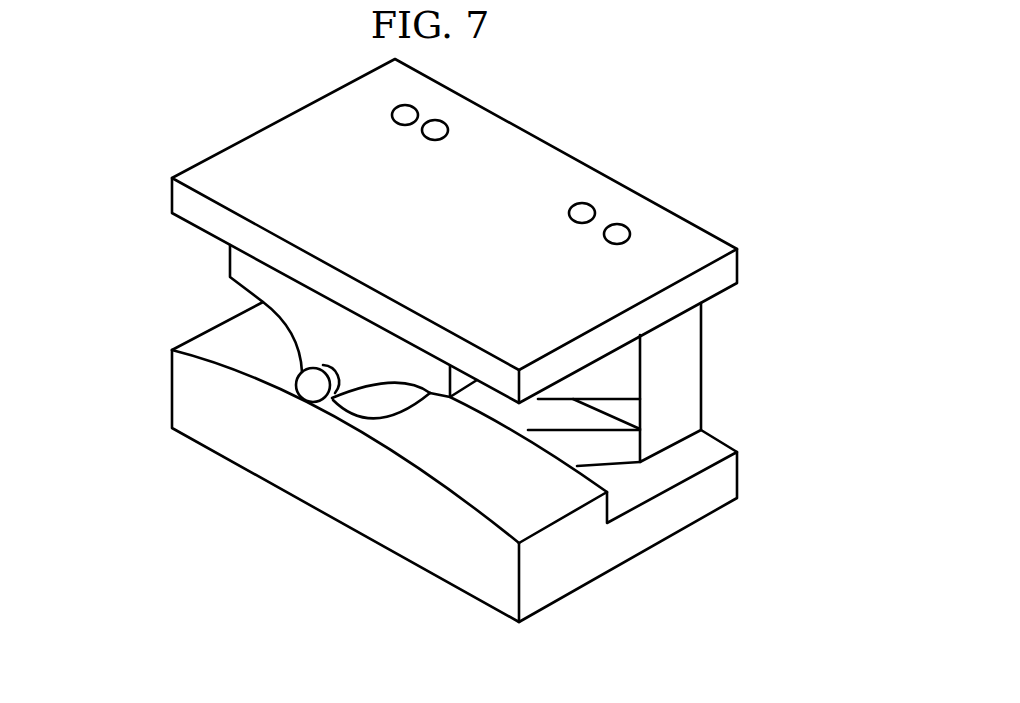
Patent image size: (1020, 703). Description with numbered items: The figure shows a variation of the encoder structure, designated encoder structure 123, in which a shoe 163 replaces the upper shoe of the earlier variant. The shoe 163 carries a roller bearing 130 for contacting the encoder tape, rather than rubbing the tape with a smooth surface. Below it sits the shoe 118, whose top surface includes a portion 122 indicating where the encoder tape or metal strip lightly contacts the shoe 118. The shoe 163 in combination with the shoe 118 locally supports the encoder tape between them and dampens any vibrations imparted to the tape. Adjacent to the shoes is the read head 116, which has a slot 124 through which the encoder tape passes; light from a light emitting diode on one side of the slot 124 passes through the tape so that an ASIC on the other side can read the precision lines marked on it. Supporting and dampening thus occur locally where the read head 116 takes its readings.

The shoe 163 is at (332, 143).
The encoder structure 123 is at (133, 207).
The shoe 118 is at (172, 350).
The portion of the top surface of the shoe 122 is at (331, 411).
The roller bearing 130 is at (360, 402).
The read head 116 is at (702, 402).
The slot 124 is at (598, 425).